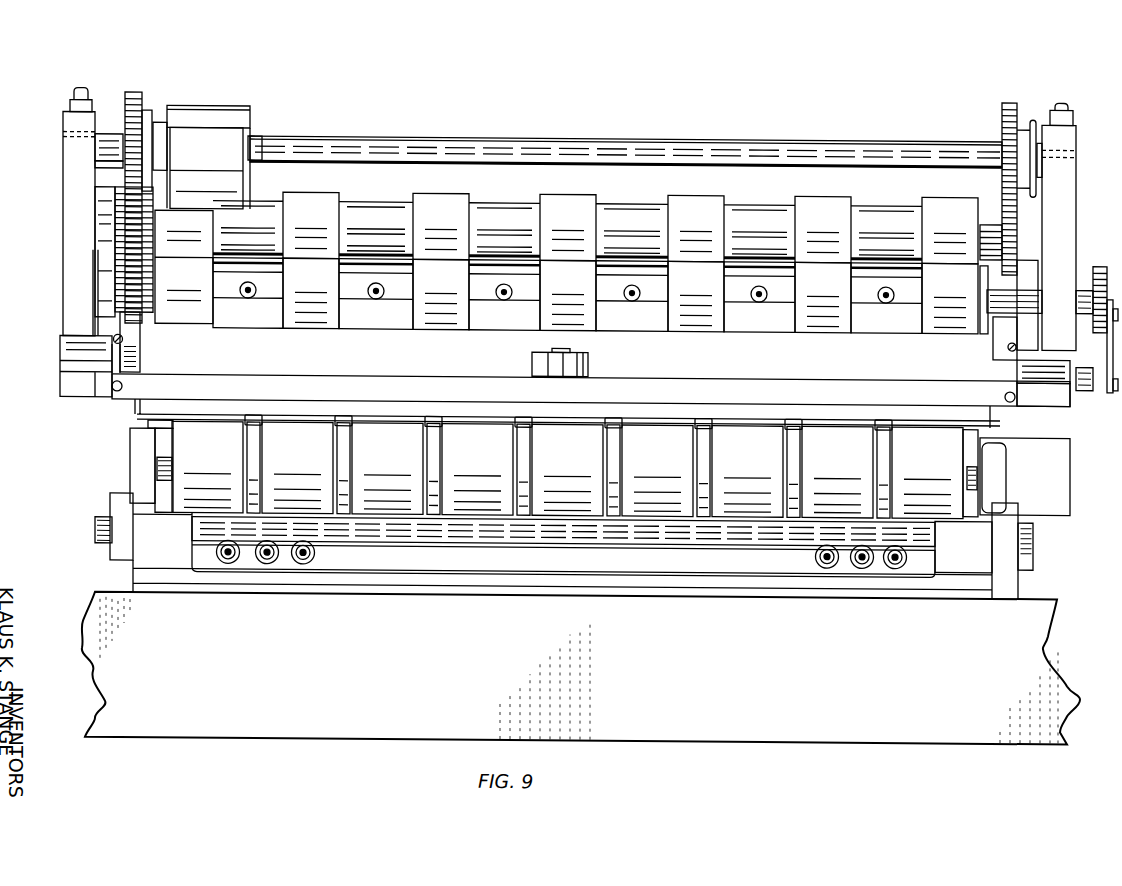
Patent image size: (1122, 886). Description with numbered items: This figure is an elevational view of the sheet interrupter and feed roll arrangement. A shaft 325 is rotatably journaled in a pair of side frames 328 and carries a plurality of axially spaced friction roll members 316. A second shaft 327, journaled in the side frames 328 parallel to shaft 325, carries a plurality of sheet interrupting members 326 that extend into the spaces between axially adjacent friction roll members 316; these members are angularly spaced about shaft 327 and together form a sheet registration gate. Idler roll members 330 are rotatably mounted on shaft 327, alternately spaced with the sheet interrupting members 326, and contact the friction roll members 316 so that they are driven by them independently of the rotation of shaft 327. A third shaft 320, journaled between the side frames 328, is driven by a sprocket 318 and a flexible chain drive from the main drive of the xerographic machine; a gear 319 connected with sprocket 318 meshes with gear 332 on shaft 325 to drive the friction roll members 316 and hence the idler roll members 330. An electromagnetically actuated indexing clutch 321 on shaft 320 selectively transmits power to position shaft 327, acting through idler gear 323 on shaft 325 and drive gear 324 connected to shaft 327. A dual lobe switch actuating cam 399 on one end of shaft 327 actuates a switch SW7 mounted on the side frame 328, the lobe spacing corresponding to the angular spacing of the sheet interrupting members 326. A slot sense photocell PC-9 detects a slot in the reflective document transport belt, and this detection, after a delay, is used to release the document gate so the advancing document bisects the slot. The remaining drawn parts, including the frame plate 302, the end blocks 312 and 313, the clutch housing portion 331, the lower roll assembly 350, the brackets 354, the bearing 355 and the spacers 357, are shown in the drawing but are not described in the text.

The frame plate 302 is at (137, 412).
The end block 312 is at (1008, 391).
The bearing block 313 is at (1057, 368).
The friction roll members 316 is at (336, 192).
The sprocket 318 is at (1033, 112).
The gear 319 is at (1003, 96).
The third shaft 320 is at (530, 131).
The indexing clutch 321 is at (242, 104).
The idler gear 323 is at (116, 205).
The drive gear 324 is at (137, 312).
The shaft 325 is at (105, 223).
The sheet interrupting members 326 is at (372, 315).
The second shaft 327 is at (982, 300).
The side frames 328 is at (65, 187).
The idler roll members 330 is at (447, 315).
The motor housing 331 is at (230, 196).
The gear 332 is at (136, 91).
The lower feed roller 350 is at (400, 427).
The mounting bracket 354 is at (137, 459).
The bearing 355 is at (977, 462).
The spacer 357 is at (606, 415).
The dual lobe switch actuating cam 399 is at (1013, 234).
The switch SW7 is at (1105, 387).
The slot sense photocell PC-9 is at (588, 364).